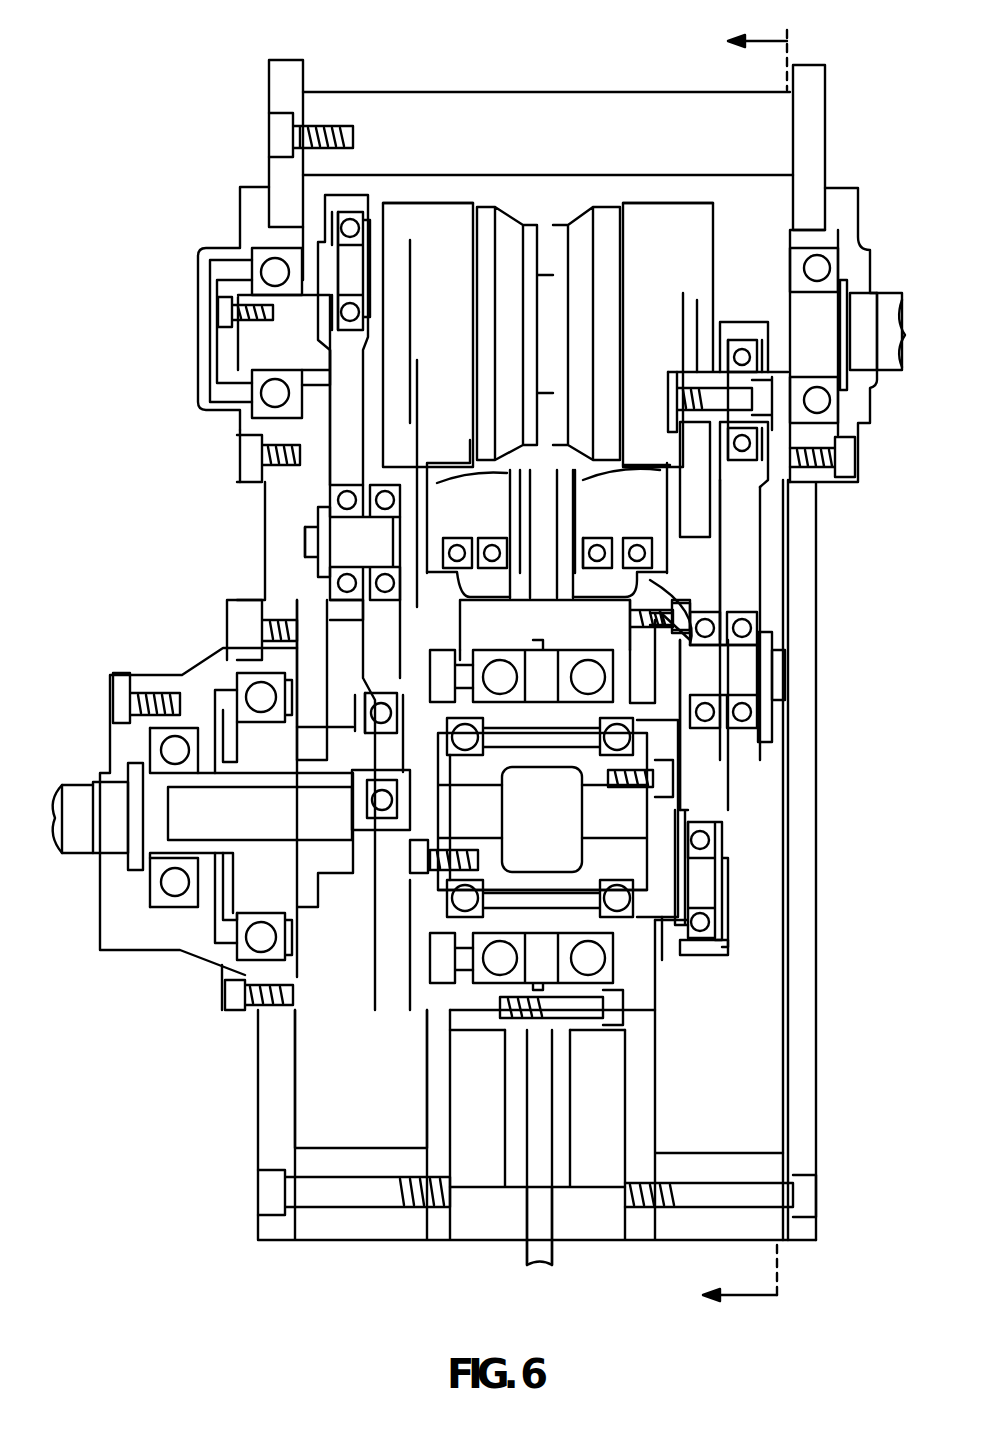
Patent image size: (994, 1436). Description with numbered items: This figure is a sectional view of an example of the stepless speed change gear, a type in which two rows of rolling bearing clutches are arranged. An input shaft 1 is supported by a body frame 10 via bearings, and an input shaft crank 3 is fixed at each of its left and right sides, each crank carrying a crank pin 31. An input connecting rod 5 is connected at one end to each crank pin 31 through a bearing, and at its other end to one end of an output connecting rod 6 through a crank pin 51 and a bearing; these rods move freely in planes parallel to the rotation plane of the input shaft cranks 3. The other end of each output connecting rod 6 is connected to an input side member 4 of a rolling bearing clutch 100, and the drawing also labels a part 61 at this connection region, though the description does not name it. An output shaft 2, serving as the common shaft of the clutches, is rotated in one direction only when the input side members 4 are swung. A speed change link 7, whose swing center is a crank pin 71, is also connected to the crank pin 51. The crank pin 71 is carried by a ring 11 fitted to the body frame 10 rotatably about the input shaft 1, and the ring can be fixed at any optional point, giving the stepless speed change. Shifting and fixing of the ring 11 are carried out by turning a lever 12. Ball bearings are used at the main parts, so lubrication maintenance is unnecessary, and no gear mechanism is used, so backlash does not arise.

The input shaft 1 is at (82, 840).
The output shaft 2 is at (885, 374).
The input shaft crank 3 is at (415, 896).
The input side member 4 is at (398, 375).
The input connecting rod 5 is at (372, 640).
The output connecting rod 6 is at (348, 455).
The speed change link 7 is at (420, 637).
The body frame 10 is at (420, 935).
The ring 11 is at (650, 622).
The lever 12 is at (553, 1270).
The crank pin 31 is at (357, 728).
The crank pin 51 is at (335, 538).
The bearing block 61 is at (348, 277).
The crank pin 71 is at (633, 512).
The rolling bearing clutch 100 is at (454, 198).